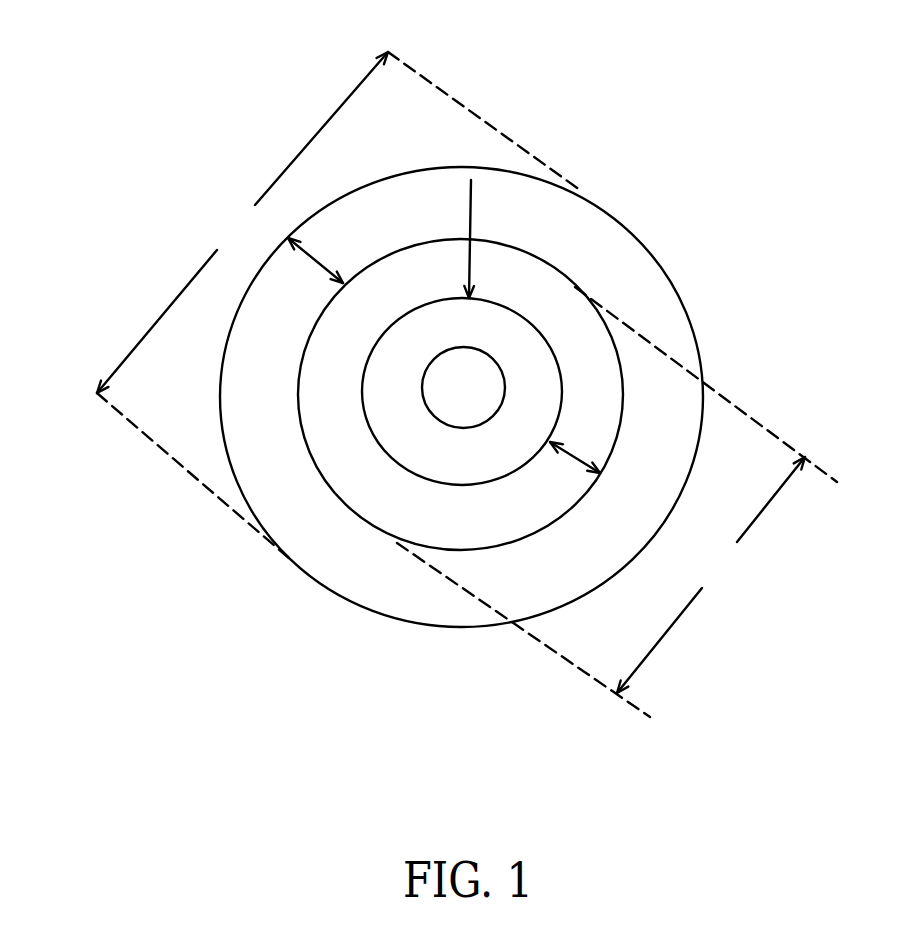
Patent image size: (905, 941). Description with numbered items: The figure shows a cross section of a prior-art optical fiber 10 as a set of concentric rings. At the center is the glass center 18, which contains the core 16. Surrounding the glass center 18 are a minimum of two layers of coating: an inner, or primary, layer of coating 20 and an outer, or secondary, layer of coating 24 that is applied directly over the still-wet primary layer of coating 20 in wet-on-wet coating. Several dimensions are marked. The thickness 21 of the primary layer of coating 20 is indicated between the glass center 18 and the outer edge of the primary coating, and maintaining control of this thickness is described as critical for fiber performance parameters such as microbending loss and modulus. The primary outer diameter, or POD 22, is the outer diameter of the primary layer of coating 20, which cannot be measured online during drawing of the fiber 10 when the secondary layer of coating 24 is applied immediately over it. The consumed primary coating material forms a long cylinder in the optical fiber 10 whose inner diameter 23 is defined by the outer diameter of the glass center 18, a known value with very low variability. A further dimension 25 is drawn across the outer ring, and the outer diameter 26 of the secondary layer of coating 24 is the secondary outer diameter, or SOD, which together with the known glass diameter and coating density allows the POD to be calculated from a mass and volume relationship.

The optical fiber 10 is at (368, 652).
The core 16 is at (470, 373).
The glass center 18 is at (532, 403).
The primary layer of coating 20 is at (350, 443).
The thickness of the primary layer of coating 21 is at (567, 457).
The primary outer diameter (POD) 22 is at (617, 502).
The inner diameter of the cylinder 23 is at (471, 180).
The secondary layer of coating 24 is at (303, 518).
The width of outer ring 25 is at (315, 258).
The outer diameter of the secondary coating layer 26 is at (338, 305).